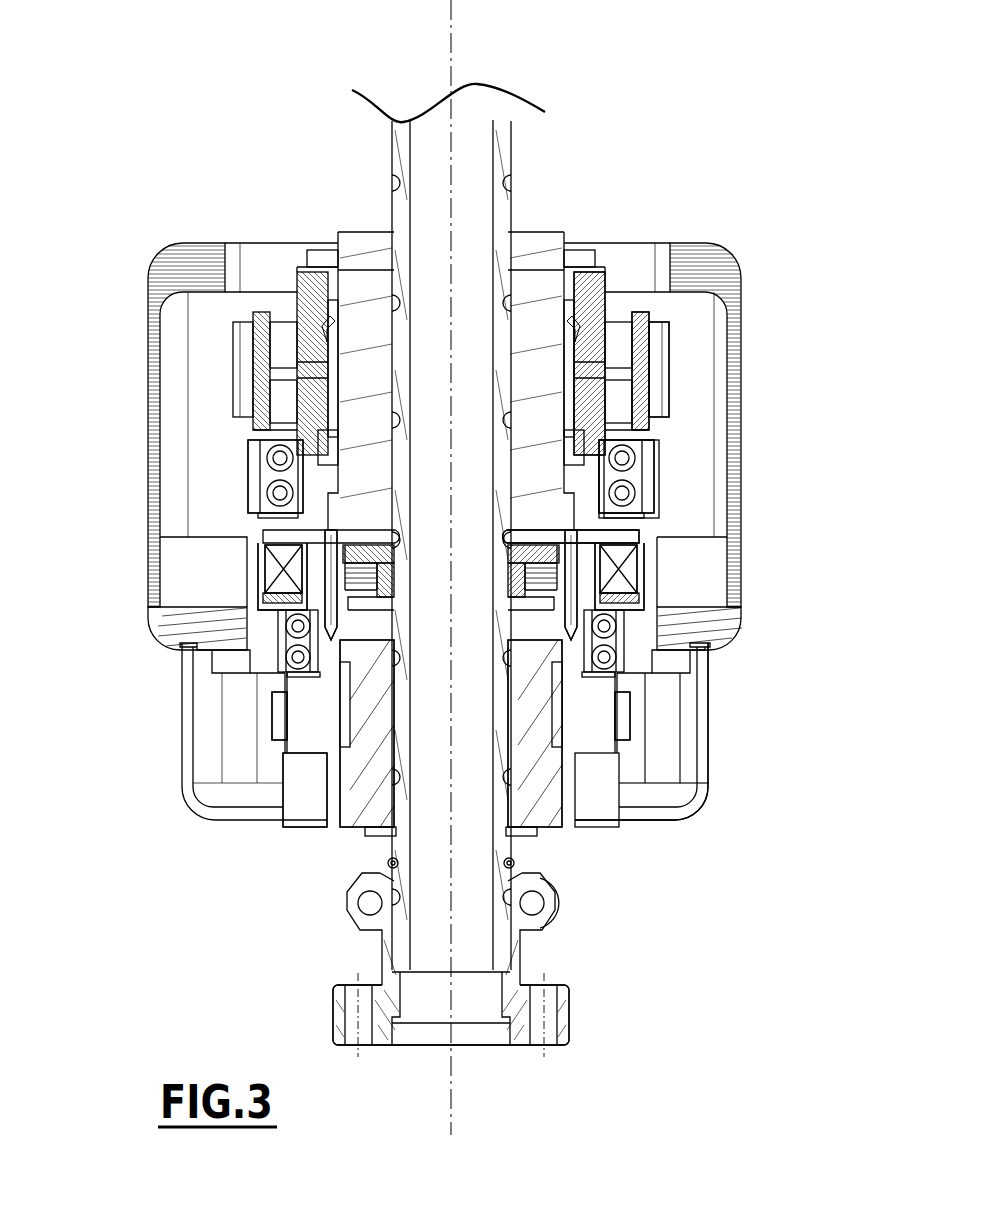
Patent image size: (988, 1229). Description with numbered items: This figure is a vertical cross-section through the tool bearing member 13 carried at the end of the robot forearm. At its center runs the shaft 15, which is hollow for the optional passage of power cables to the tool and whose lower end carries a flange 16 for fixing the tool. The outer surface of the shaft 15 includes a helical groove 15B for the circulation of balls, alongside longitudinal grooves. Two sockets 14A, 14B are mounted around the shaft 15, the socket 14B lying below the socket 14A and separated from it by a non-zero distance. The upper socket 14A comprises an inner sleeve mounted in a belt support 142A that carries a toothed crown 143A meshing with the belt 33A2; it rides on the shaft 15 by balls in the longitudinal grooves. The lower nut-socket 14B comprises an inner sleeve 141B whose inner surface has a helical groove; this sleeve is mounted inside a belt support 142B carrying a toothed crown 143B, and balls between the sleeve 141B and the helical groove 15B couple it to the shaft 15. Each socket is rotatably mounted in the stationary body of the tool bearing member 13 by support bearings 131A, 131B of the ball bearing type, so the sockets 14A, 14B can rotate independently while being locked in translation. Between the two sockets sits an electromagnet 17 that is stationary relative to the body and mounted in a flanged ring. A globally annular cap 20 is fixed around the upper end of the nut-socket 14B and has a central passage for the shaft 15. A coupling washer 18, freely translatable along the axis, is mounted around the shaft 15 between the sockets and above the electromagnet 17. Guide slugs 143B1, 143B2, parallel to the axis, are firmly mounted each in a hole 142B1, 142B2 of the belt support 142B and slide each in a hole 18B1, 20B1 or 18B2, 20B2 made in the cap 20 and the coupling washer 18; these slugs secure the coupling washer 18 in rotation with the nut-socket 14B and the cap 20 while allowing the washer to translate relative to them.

The tool bearing member 13 is at (322, 193).
The shaft 15 is at (502, 152).
The helical groove 15B is at (390, 183).
The socket 14A is at (94, 252).
The socket 14B is at (94, 835).
The belt support 142A is at (588, 290).
The toothed crown 143A is at (640, 313).
The belt 33A2 is at (655, 378).
The hole 18B1 is at (326, 522).
The hole 20B1 is at (321, 556).
The cap 20 is at (315, 572).
The guide slug 143B1 is at (330, 610).
The hole 142B1 is at (283, 710).
The toothed crown 143B is at (287, 752).
The inner sleeve 141B is at (368, 797).
The flange 16 is at (518, 993).
The belt support 142B is at (570, 797).
The hole 142B2 is at (630, 712).
The support bearing 131B is at (640, 716).
The guide slug 143B2 is at (627, 573).
The electromagnet 17 is at (576, 612).
The hole 20B2 is at (573, 562).
The coupling washer 18 is at (627, 532).
The hole 18B2 is at (575, 537).
The support bearing 131A is at (640, 475).